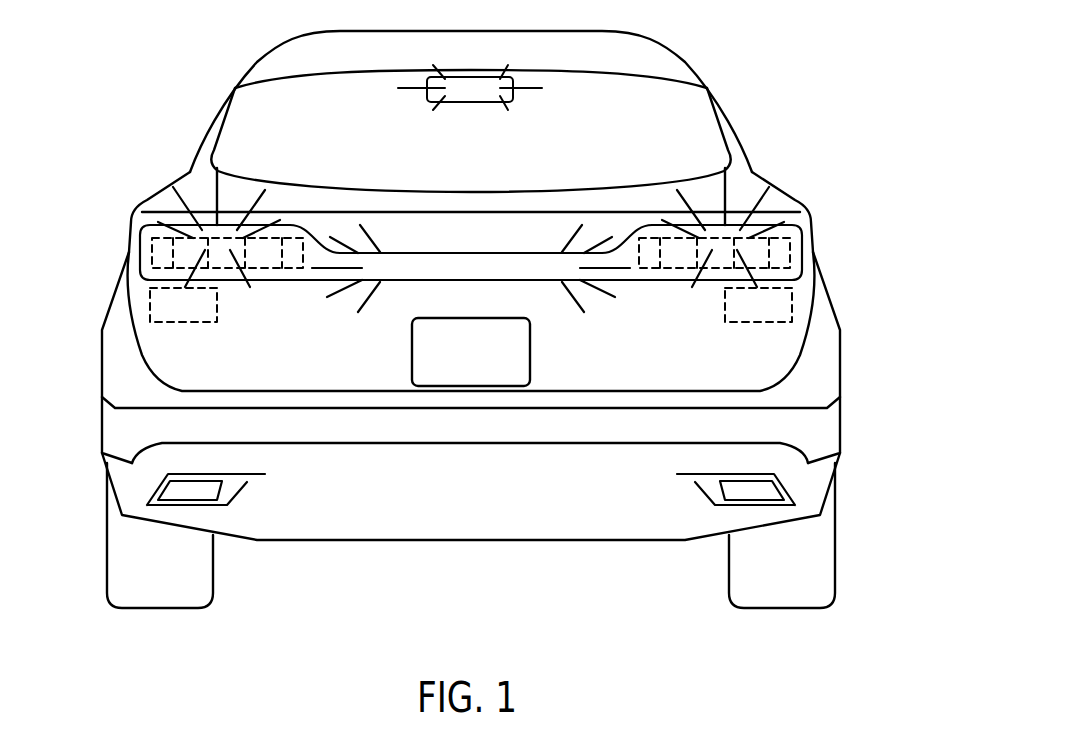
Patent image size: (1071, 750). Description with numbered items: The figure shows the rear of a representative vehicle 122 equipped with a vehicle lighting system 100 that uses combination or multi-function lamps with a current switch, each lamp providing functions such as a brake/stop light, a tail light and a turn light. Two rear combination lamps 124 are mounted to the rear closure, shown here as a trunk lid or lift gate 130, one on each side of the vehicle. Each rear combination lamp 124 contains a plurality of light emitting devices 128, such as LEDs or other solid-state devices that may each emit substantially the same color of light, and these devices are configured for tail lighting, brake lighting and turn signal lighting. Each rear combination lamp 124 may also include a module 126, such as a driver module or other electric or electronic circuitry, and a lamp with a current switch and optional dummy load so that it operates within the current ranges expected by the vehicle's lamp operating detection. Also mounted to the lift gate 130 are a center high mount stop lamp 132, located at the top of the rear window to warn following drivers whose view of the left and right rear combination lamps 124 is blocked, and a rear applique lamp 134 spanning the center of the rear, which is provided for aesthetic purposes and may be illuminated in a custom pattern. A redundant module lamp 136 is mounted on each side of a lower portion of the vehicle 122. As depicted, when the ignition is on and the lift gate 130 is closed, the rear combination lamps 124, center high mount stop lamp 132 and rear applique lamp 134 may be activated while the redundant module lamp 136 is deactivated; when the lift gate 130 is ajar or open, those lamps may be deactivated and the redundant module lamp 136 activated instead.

The vehicle lighting system 100 is at (76, 286).
The vehicle 122 is at (685, 55).
The rear combination lamp 124 is at (138, 243).
The module 126 is at (218, 307).
The light emitting devices 128 is at (165, 236).
The lift gate 130 is at (770, 376).
The center high mount stop lamp 132 is at (472, 92).
The rear applique lamp 134 is at (410, 265).
The redundant module lamp 136 is at (210, 488).